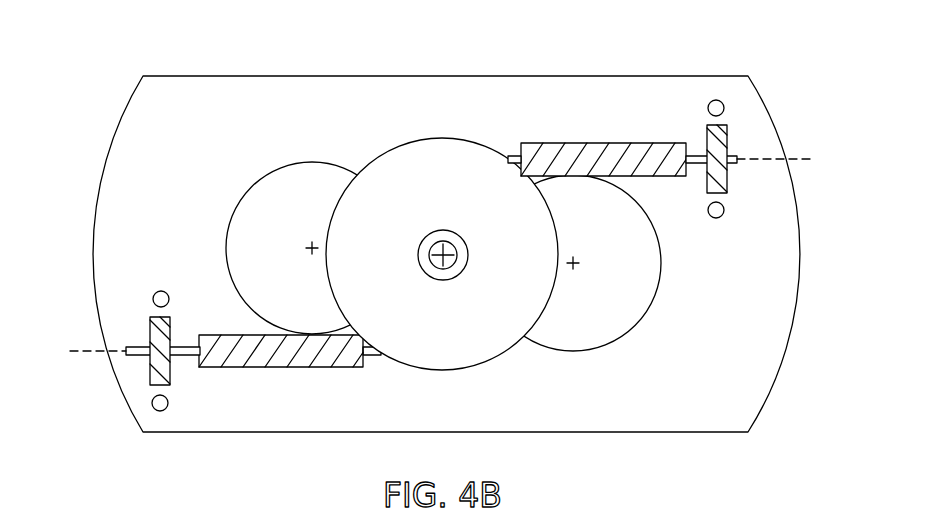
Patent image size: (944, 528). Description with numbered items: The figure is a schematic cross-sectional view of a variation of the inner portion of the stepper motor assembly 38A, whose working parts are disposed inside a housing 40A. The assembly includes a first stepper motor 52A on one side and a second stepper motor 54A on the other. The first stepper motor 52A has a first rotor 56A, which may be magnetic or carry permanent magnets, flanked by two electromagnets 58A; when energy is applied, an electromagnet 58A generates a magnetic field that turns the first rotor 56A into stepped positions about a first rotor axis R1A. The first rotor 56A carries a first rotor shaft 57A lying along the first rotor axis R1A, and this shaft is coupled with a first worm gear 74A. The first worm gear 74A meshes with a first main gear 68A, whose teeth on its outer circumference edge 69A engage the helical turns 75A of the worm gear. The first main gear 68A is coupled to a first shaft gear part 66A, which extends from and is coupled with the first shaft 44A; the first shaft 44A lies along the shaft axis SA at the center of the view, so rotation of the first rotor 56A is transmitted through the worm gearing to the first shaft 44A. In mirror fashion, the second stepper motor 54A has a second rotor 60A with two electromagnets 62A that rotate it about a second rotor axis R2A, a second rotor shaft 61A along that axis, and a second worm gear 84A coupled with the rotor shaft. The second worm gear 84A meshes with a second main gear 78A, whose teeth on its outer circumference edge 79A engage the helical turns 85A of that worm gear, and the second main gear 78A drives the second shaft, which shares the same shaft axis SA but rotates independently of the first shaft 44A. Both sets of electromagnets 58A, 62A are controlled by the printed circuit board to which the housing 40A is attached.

The stepper motor assembly 38A is at (454, 247).
The housing 40A is at (681, 433).
The first shaft 44A is at (437, 260).
The first stepper motor 52A is at (213, 315).
The second stepper motor 54A is at (685, 202).
The first rotor 56A is at (150, 333).
The first rotor shaft 57A is at (185, 346).
The electromagnets 58A is at (192, 333).
The second rotor 60A is at (727, 176).
The second rotor shaft 61A is at (697, 165).
The electromagnets 62A is at (708, 107).
The first shaft gear part 66A is at (417, 157).
The first main gear 68A is at (287, 227).
The outer circumference edge 69A is at (243, 197).
The first worm gear 74A is at (288, 376).
The helical turns 75A is at (343, 355).
The second main gear 78A is at (598, 284).
The outer circumference edge 79A is at (643, 312).
The second worm gear 84A is at (601, 136).
The helical turns 85A is at (548, 160).
The shaft axis SA is at (450, 260).
The first rotor axis R1A is at (80, 352).
The second rotor axis R2A is at (804, 157).